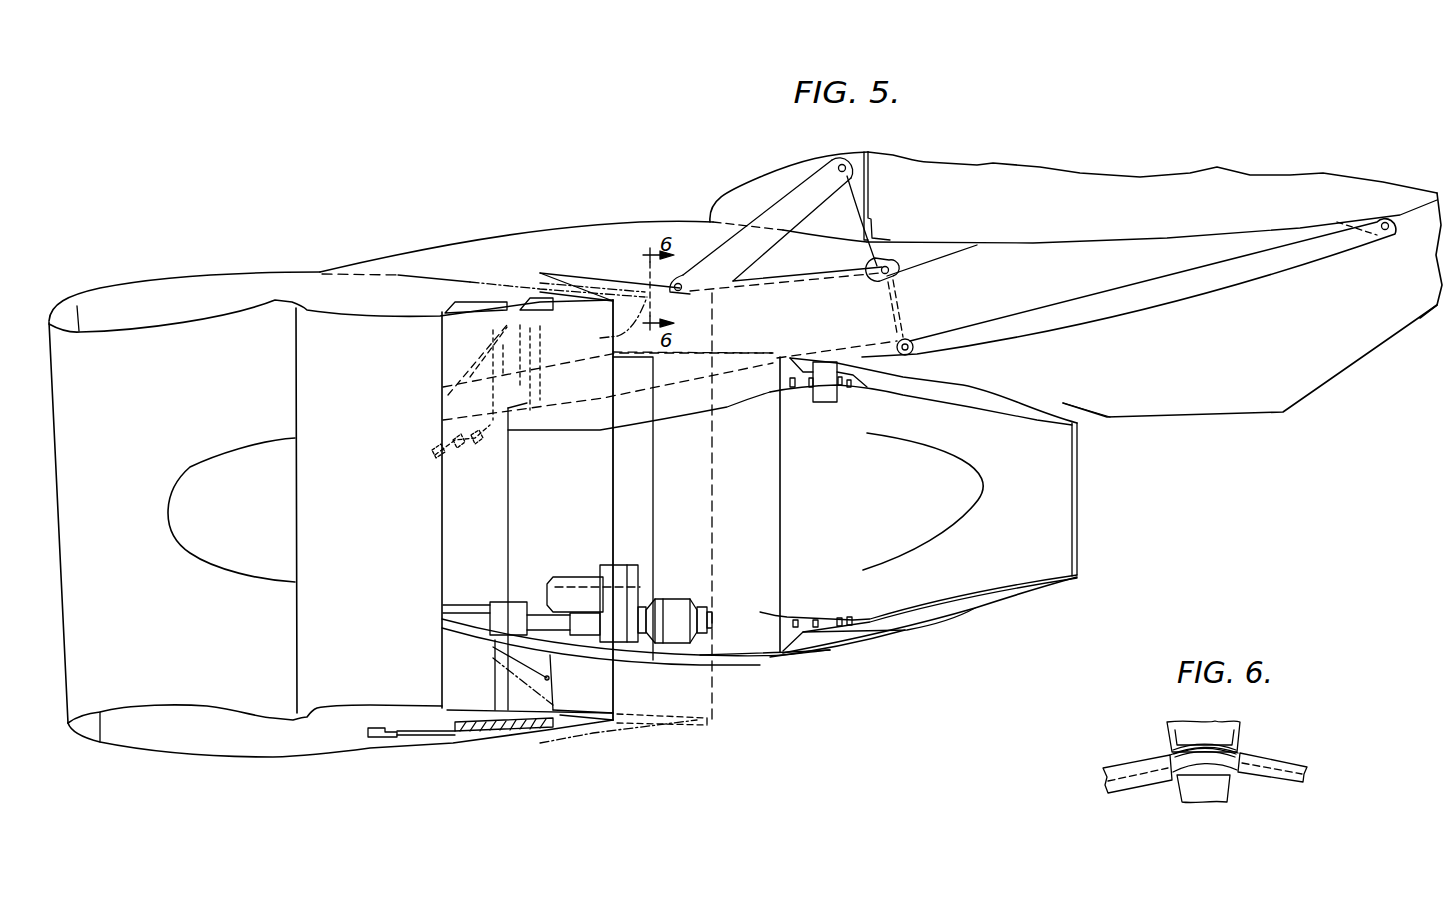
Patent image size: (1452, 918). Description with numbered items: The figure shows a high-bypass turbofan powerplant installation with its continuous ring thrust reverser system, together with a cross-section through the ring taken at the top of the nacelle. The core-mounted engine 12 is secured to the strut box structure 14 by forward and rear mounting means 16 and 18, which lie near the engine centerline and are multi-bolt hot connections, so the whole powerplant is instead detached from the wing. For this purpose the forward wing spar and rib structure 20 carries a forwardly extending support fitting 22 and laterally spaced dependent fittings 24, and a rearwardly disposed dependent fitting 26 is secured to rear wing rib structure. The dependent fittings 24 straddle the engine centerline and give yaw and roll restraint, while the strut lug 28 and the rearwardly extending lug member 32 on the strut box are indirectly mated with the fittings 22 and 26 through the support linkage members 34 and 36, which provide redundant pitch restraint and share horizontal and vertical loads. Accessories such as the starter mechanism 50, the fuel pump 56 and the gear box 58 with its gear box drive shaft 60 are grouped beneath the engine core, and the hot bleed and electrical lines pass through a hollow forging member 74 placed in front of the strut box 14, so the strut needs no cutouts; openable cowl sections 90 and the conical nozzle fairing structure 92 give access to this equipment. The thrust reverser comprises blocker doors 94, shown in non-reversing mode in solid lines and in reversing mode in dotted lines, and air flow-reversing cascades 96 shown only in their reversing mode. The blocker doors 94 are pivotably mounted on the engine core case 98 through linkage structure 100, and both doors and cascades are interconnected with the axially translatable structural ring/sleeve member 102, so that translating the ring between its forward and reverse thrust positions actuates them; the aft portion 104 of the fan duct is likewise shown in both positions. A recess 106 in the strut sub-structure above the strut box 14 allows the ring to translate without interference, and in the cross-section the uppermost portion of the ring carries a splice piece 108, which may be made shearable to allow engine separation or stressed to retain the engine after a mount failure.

In FIG. 5, the core-mounted engine 12 is at (849, 487).
In FIG. 5, the strut box structure 14 is at (770, 318).
In FIG. 6, the strut box structure 14 is at (1203, 795).
In FIG. 5, the forward mounting means 16 is at (493, 457).
In FIG. 5, the rear mounting means 18 is at (813, 395).
In FIG. 5, the forward wing spar and rib structure 20 is at (873, 207).
In FIG. 5, the forwardly extending support fitting 22 is at (857, 184).
In FIG. 5, the dependent fitting 24 is at (925, 258).
In FIG. 5, the rearwardly disposed dependent fitting 26 is at (1408, 220).
In FIG. 5, the strut lug 28 is at (733, 280).
In FIG. 5, the rearwardly extending lug member 32 is at (907, 336).
In FIG. 5, the support linkage member 34 is at (767, 241).
In FIG. 5, the support linkage member 36 is at (1198, 282).
In FIG. 5, the starter mechanism 50 is at (672, 600).
In FIG. 5, the fuel pump 56 is at (585, 585).
In FIG. 5, the gear box 58 is at (627, 573).
In FIG. 5, the gear box drive shaft 60 is at (540, 616).
In FIG. 5, the hollow forging member 74 is at (530, 397).
In FIG. 5, the openable cowl sections 90 is at (747, 647).
In FIG. 5, the conical nozzle fairing structure 92 is at (920, 618).
In FIG. 5, the blocker doors 94 is at (542, 701).
In FIG. 5, the air flow-reversing cascades 96 is at (517, 732).
In FIG. 5, the engine core case 98 is at (568, 657).
In FIG. 5, the linkage structure 100 is at (494, 703).
In FIG. 5, the structural ring/sleeve member 102 is at (670, 714).
In FIG. 6, the structural ring/sleeve member 102 is at (1277, 765).
In FIG. 5, the aft portion of the fan duct 104 is at (492, 737).
In FIG. 5, the recess 106 is at (603, 300).
In FIG. 6, the splice piece 108 is at (1168, 757).